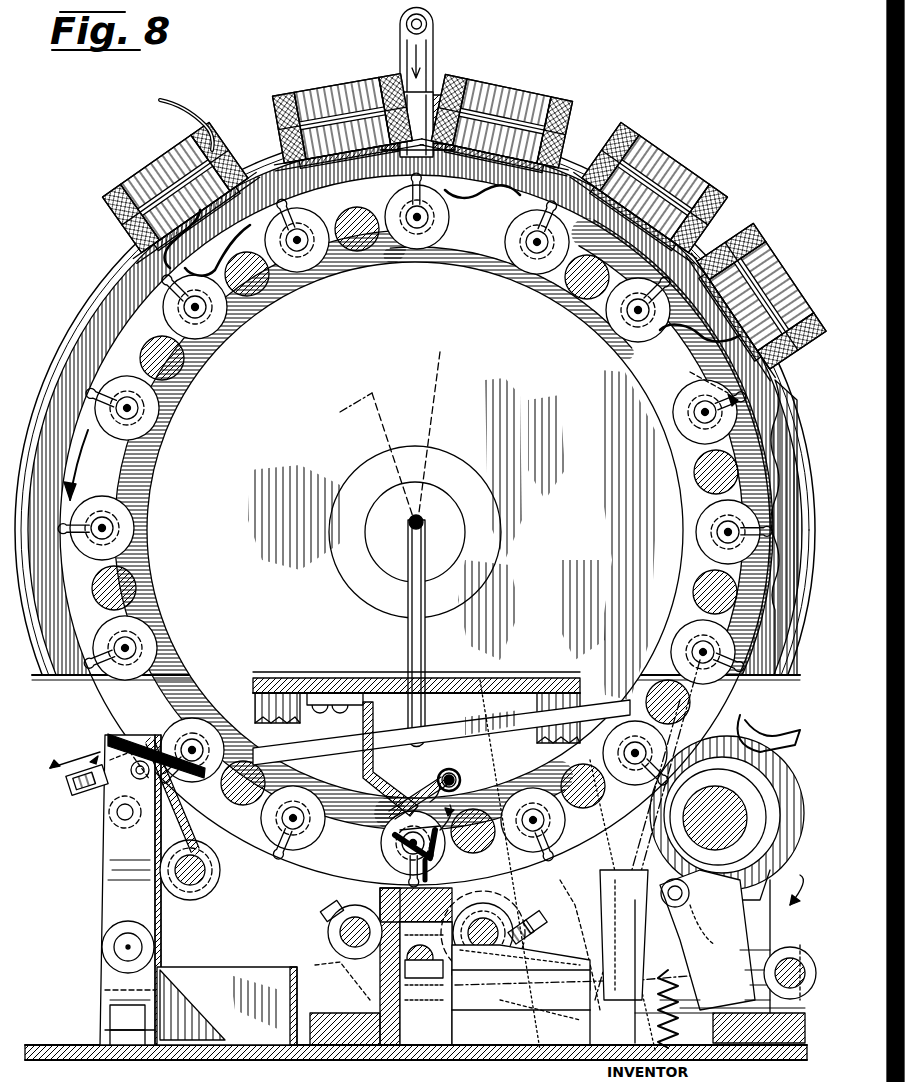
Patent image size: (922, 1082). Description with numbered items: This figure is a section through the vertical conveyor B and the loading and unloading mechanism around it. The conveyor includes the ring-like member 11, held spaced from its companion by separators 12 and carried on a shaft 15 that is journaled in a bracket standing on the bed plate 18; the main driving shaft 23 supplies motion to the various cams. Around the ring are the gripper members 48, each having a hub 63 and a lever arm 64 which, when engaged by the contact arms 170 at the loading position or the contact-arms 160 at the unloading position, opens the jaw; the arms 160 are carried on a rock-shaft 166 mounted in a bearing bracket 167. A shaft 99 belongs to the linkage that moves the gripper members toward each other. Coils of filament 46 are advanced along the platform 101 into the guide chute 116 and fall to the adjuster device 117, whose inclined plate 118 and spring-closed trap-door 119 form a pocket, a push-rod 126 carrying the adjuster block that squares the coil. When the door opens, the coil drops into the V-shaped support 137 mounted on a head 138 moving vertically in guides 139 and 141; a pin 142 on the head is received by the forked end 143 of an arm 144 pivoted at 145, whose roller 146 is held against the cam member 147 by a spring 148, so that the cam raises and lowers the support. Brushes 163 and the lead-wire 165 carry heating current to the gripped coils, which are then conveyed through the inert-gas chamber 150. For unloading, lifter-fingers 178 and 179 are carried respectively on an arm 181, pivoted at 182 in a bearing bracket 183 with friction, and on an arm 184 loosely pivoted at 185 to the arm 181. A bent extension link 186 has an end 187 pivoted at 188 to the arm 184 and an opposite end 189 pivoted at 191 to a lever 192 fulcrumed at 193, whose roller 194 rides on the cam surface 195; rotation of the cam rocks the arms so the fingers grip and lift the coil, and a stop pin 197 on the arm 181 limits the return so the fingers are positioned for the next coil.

The ring-like member 11 is at (640, 366).
The separators 12 is at (358, 215).
The shaft 15 is at (468, 540).
The bed plate 18 is at (262, 1062).
The main driving shaft 23 is at (742, 800).
The filament 46 is at (180, 318).
The gripper member 48 is at (515, 240).
The hub 63 is at (690, 400).
The lever arm 64 is at (649, 682).
The shaft 99 is at (328, 930).
The platform 101 is at (385, 436).
The guide chute 116 is at (428, 665).
The adjuster device 117 is at (466, 770).
The inclined plate 118 is at (428, 780).
The trap-door 119 is at (446, 790).
The push-rod 126 is at (410, 760).
The V-shaped support 137 is at (459, 817).
The head 138 is at (500, 918).
The guide 139 is at (445, 983).
The guide 141 is at (345, 972).
The pin 142 is at (385, 930).
The forked end 143 is at (428, 1046).
The arm 144 is at (555, 965).
The pivot 145 is at (792, 950).
The roller 146 is at (690, 888).
The cam member 147 is at (765, 940).
The spring 148 is at (680, 1034).
The chamber 150 is at (712, 245).
The contact-arms 160 is at (178, 815).
The brushes 163 is at (760, 738).
The lead-wire 165 is at (160, 110).
The rock-shaft 166 is at (208, 876).
The bearing bracket 167 is at (215, 240).
The contact arms 170 is at (537, 913).
The lifter-finger 178 is at (160, 745).
The lifter-finger 179 is at (200, 740).
The arm 181 is at (105, 870).
The pivot 182 is at (114, 947).
The bearing bracket 183 is at (105, 995).
The arm 184 is at (125, 790).
The pivot 185 is at (109, 818).
The bent extension link 186 is at (355, 738).
The end 187 is at (70, 782).
The pivot 188 is at (75, 759).
The end 189 is at (610, 730).
The pivot 191 is at (640, 690).
The lever 192 is at (624, 935).
The fulcrum 193 is at (598, 988).
The roller 194 is at (567, 865).
The cam surface 195 is at (796, 890).
The stop pin 197 is at (118, 843).